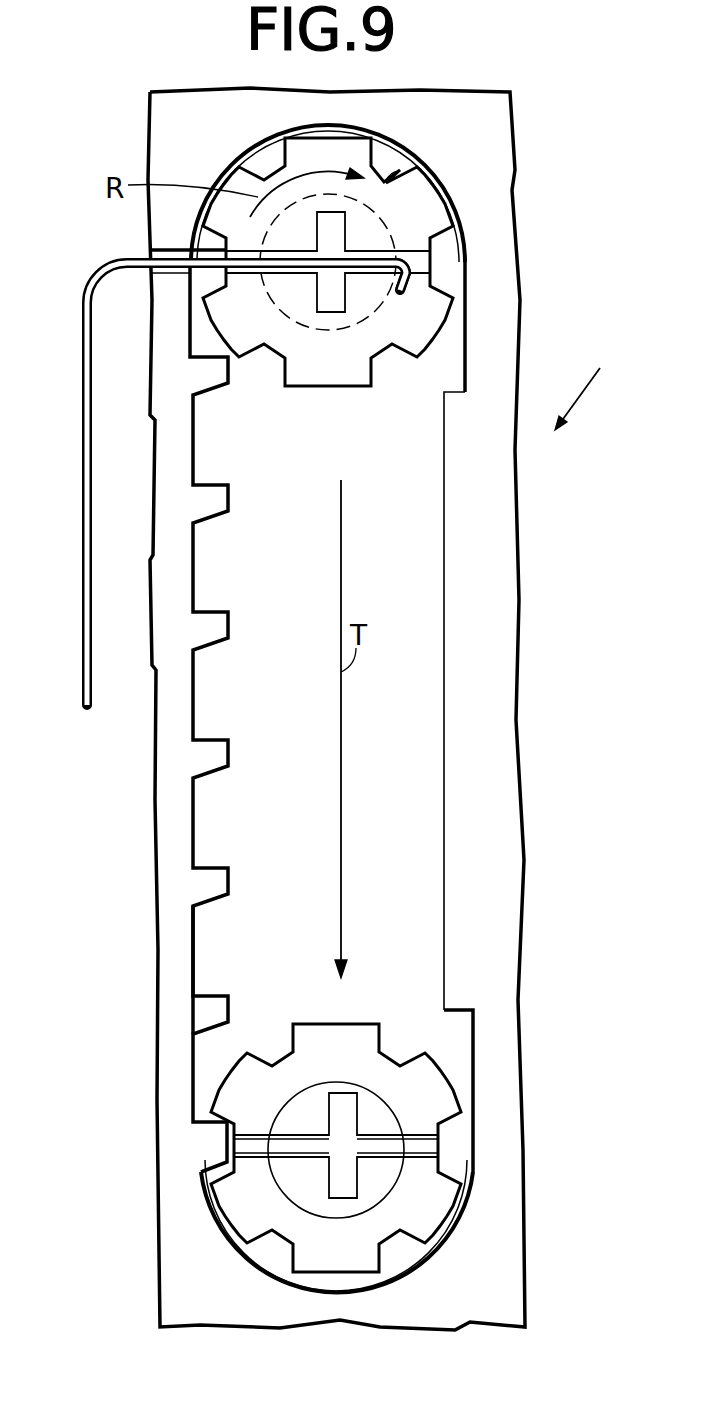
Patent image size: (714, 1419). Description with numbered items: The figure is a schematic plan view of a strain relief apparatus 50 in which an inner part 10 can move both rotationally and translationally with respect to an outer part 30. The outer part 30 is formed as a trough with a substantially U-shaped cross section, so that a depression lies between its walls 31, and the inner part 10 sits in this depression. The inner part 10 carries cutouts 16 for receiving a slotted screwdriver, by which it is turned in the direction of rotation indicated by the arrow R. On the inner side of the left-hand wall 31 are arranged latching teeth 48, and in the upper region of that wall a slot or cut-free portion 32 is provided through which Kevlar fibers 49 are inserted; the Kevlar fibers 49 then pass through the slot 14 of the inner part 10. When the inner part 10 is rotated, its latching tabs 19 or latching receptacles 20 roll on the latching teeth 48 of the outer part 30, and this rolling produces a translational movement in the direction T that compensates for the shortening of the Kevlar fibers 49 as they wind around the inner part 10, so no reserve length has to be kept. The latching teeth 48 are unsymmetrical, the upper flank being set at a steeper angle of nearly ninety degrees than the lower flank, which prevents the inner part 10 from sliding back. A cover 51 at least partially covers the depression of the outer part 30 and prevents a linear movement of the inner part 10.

The inner part 10 is at (410, 323).
The slot 14 is at (432, 262).
The cutouts 16 is at (337, 295).
The latching tabs 19 is at (440, 190).
The latching receptacles 20 is at (388, 168).
The outer part 30 is at (498, 217).
The walls 31 is at (495, 972).
The cut-free portion 32 is at (155, 250).
The latching teeth 48 is at (225, 885).
The Kevlar fibers 49 is at (83, 432).
The strain relief apparatus 50 is at (601, 389).
The cover 51 is at (446, 638).